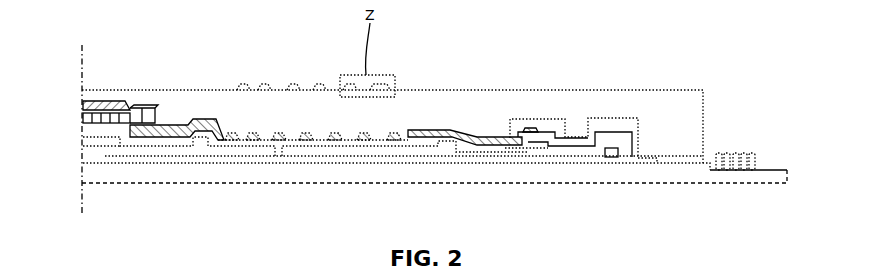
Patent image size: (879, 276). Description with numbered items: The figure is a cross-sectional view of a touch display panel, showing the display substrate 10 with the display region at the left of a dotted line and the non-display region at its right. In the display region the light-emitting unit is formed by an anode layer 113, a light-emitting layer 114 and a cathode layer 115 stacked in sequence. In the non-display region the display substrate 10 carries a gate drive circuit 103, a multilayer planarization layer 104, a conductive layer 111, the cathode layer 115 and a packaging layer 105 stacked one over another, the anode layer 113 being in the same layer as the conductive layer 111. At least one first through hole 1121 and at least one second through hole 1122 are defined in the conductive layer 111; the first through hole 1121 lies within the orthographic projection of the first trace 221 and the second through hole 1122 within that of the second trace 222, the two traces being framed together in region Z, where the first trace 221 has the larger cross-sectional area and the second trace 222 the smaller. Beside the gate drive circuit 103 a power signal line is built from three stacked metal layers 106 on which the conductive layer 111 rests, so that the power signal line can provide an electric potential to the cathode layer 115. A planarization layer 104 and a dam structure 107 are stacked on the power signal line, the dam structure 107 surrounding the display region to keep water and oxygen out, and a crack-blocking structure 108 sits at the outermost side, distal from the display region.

The display substrate 10 is at (70, 114).
The gate drive circuit 103 is at (215, 163).
The planarization layer 104 is at (98, 141).
The packaging layer 105 is at (683, 104).
The metal layers 106 is at (483, 159).
The dam structure 107 is at (548, 120).
The crack-blocking structure 108 is at (734, 152).
The conductive layer 111 is at (402, 122).
The anode layer 113 is at (200, 121).
The light-emitting layer 114 is at (123, 112).
The cathode layer 115 is at (100, 101).
The first through hole 1121 is at (378, 141).
The second through hole 1122 is at (350, 141).
The first trace 221 is at (380, 83).
The second trace 222 is at (350, 83).